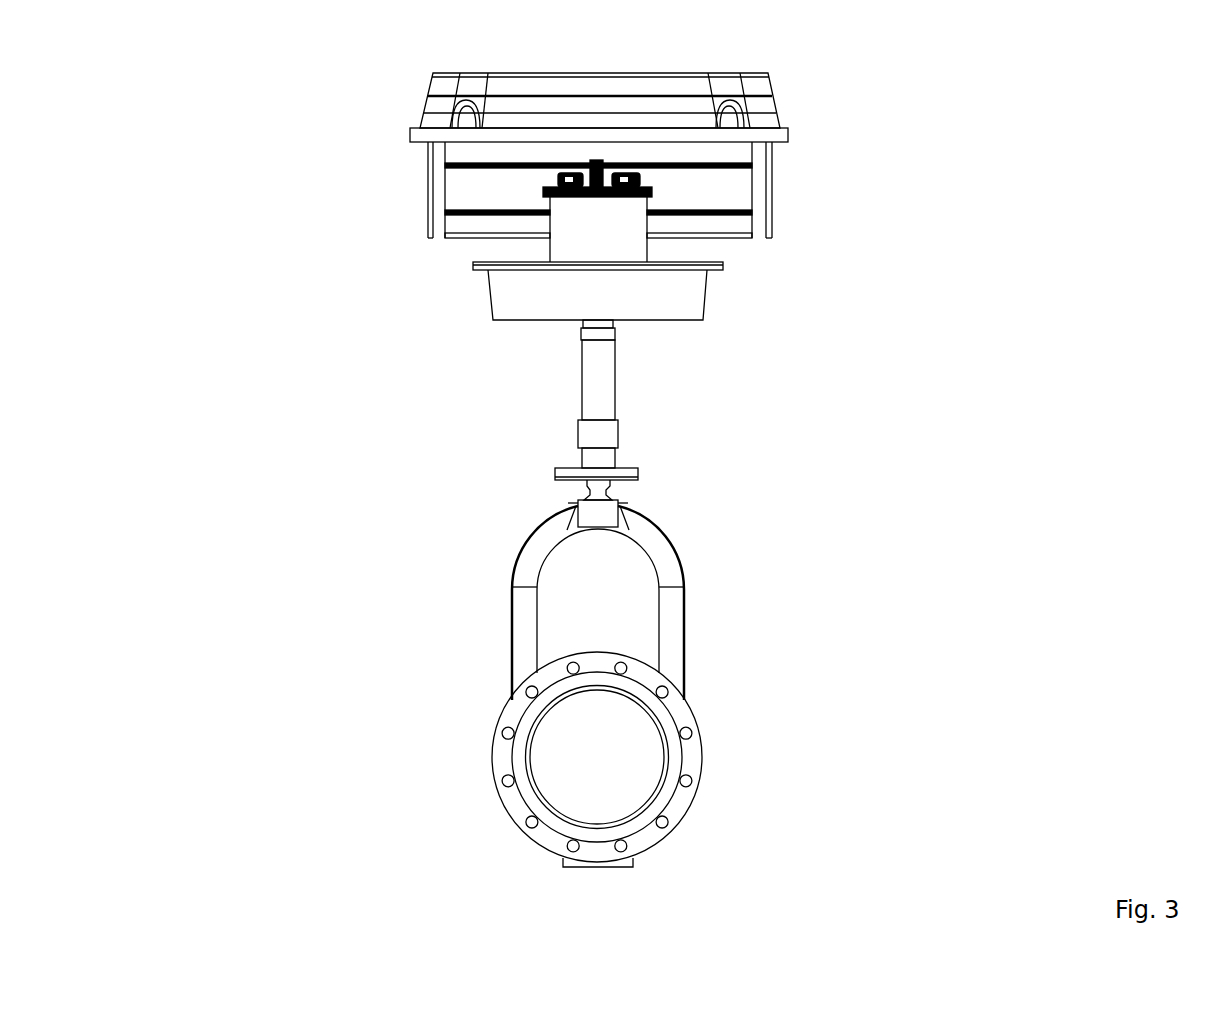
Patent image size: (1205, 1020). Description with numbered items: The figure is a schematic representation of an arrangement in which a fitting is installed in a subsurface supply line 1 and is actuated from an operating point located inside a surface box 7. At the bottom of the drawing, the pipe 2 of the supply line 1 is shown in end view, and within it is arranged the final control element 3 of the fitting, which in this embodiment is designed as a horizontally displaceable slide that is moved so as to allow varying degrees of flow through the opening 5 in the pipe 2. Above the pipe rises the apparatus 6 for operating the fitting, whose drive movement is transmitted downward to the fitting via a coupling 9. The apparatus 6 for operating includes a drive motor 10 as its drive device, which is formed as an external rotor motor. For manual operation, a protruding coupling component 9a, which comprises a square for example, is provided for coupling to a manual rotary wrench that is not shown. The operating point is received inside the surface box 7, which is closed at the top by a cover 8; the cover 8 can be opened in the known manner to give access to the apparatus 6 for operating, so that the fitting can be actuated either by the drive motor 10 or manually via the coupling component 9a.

The supply line 1 is at (677, 707).
The pipe 2 is at (683, 770).
The final control element 3 is at (673, 637).
The opening 5 is at (557, 780).
The apparatus for operating 6 is at (635, 227).
The surface box 7 is at (440, 218).
The cover 8 is at (442, 80).
The coupling 9 is at (600, 403).
The coupling component 9a is at (594, 162).
The drive motor 10 is at (680, 292).